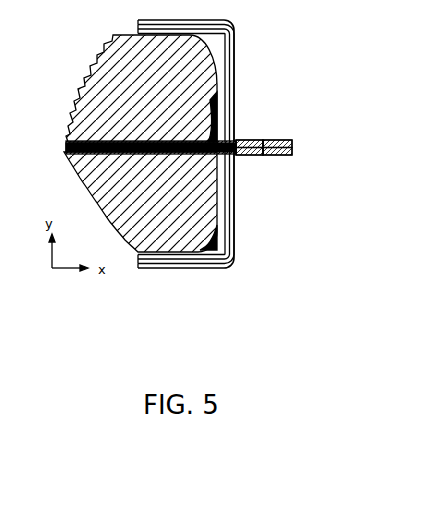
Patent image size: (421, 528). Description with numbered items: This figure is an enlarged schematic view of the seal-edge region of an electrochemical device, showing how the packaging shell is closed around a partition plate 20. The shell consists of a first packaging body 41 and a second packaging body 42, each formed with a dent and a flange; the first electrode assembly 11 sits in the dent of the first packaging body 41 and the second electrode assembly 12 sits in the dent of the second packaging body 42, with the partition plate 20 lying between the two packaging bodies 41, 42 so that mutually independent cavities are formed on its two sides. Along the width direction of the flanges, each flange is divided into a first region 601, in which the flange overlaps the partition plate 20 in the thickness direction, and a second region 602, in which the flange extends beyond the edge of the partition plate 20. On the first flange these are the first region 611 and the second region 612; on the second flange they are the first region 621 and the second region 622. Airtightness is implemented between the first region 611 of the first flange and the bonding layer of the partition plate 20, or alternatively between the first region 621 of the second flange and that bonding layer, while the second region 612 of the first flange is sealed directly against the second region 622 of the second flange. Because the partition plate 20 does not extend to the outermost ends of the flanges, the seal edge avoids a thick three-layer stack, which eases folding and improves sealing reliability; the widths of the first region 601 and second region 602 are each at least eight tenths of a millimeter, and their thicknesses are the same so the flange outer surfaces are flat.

The first electrode assembly 11 is at (236, 72).
The second electrode assembly 12 is at (232, 218).
The partition plate 20 is at (238, 136).
The first packaging body 41 is at (233, 32).
The second packaging body 42 is at (233, 269).
The first region 601 is at (108, 300).
The second region 602 is at (197, 300).
The first region of the first flange 611 is at (247, 139).
The second region of the first flange 612 is at (283, 139).
The first region of the second flange 621 is at (246, 156).
The second region of the second flange 622 is at (281, 156).